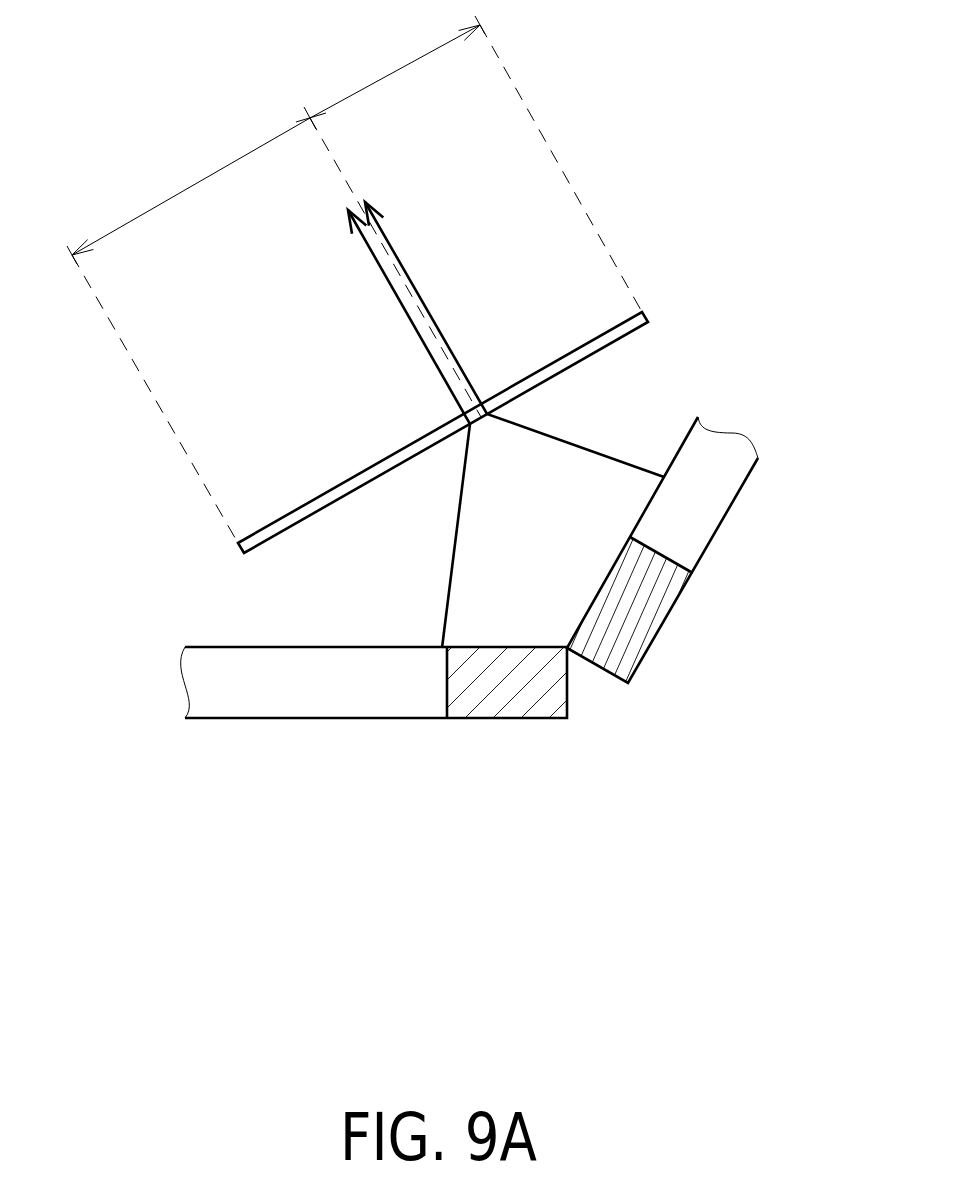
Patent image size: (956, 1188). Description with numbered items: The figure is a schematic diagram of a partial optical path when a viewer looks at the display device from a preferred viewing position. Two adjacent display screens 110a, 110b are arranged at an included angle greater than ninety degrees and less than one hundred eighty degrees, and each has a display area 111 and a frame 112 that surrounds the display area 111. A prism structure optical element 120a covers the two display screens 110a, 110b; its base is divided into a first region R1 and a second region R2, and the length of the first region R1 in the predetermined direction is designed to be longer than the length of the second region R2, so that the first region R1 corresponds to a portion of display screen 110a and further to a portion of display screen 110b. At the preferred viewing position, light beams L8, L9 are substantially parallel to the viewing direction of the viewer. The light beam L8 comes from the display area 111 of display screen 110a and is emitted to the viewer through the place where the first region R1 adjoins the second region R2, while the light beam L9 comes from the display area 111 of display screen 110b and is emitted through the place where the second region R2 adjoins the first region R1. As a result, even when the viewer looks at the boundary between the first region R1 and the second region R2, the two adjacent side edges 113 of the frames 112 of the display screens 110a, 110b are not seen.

The display screen 110a is at (475, 811).
The display screen 110b is at (805, 801).
The display area 111 is at (367, 697).
The frame 112 is at (480, 705).
The side edge 113 is at (582, 618).
The prism structure optical element 120a is at (215, 553).
The light beam L8 is at (382, 270).
The light beam L9 is at (403, 268).
The first region R1 is at (196, 185).
The second region R2 is at (397, 67).